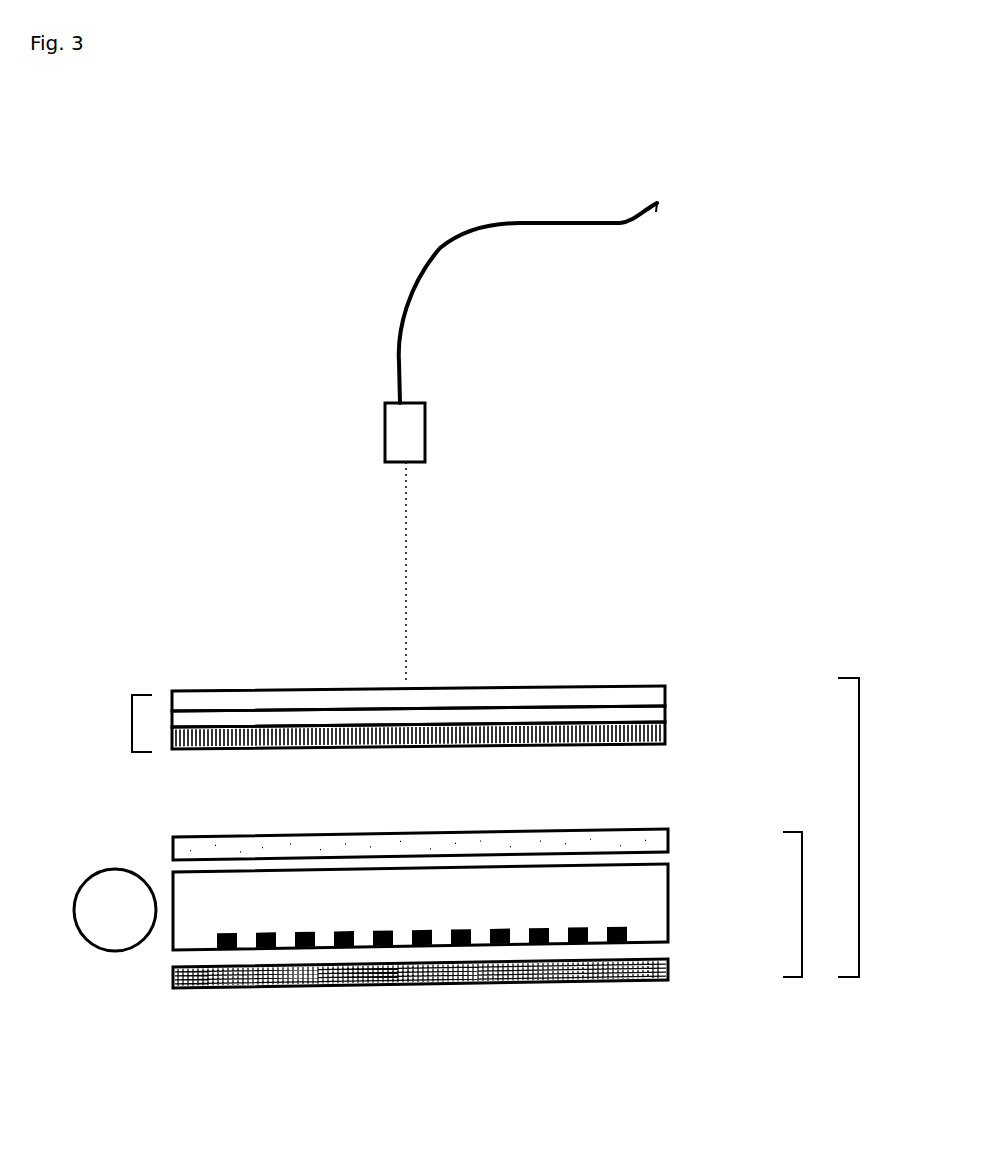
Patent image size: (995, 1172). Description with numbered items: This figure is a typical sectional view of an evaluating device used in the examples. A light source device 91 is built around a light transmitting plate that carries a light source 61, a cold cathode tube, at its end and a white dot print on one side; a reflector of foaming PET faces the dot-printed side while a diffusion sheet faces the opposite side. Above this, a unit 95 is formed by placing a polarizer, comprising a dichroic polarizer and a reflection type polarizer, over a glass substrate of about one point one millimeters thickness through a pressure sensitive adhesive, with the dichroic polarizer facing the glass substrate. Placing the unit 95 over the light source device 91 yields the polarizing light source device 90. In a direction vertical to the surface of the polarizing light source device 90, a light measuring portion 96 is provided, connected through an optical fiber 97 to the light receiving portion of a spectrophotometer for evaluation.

The light source 61 is at (98, 876).
The polarizing light source device 90 is at (865, 827).
The light source device 91 is at (810, 904).
The unit 95 is at (122, 723).
The light measuring portion 96 is at (425, 443).
The optical fiber 97 is at (432, 280).